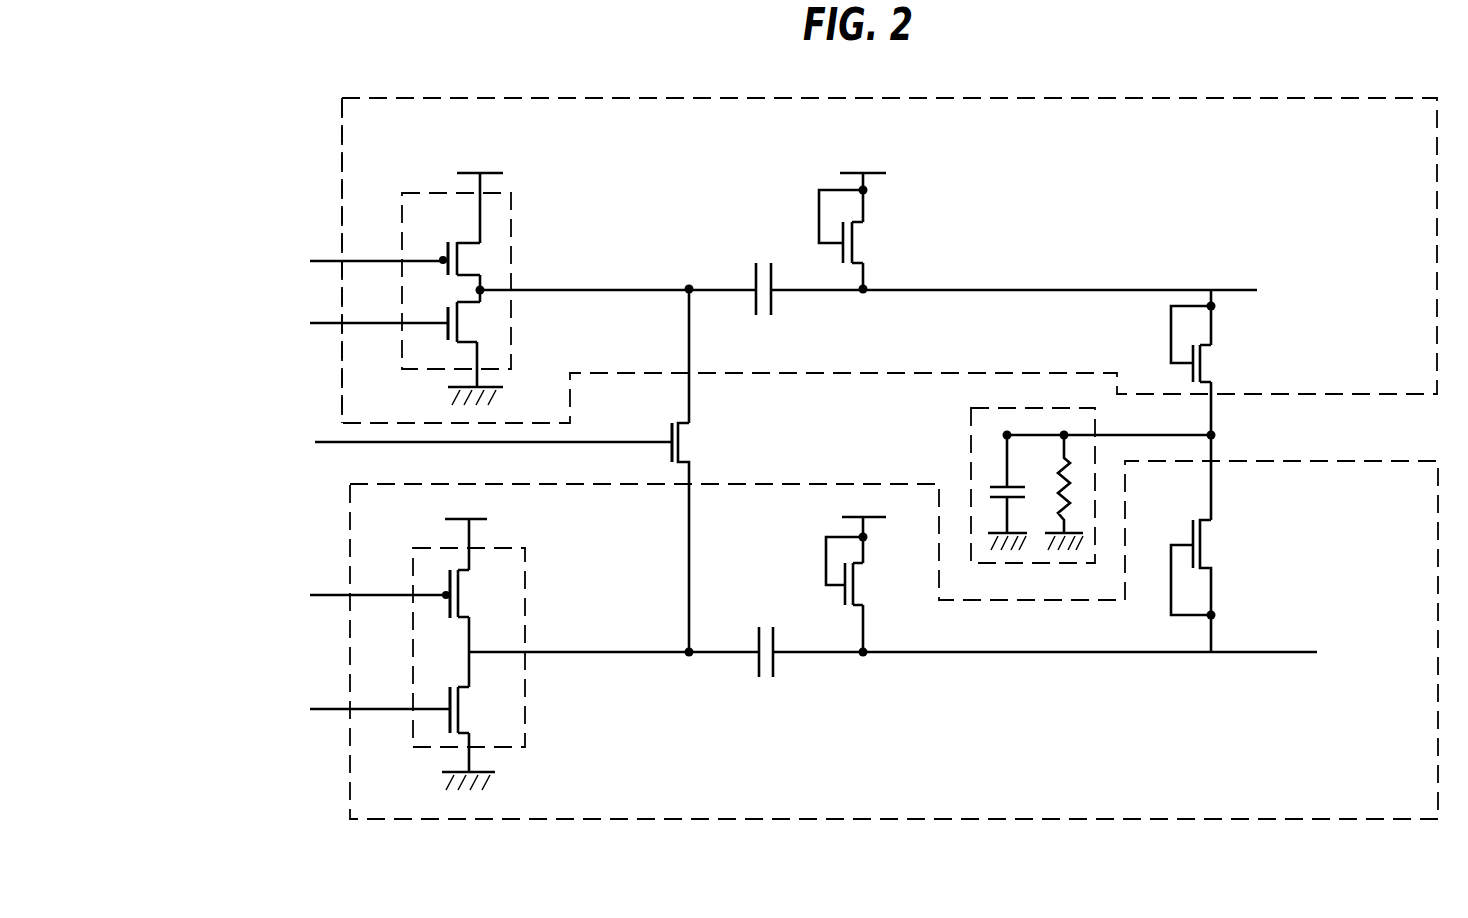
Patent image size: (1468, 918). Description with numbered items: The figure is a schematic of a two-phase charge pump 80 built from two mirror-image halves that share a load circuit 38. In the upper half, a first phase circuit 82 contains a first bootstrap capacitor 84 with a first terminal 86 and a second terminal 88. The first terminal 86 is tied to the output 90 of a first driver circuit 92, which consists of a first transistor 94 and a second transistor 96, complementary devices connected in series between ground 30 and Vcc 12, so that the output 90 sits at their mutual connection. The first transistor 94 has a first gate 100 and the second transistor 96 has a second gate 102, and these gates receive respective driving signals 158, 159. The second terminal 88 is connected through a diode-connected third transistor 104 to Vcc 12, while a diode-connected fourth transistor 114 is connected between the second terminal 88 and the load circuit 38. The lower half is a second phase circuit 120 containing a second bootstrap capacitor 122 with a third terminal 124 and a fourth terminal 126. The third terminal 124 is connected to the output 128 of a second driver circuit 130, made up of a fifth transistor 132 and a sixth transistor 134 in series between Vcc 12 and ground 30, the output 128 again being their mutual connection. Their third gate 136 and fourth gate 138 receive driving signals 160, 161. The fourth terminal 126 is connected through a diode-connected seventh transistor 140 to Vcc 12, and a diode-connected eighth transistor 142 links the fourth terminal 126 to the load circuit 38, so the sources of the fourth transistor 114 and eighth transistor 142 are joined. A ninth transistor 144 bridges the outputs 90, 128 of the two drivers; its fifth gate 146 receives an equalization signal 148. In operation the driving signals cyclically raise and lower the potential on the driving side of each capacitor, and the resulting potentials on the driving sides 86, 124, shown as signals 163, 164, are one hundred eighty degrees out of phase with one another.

The Vcc 12 is at (505, 152).
The ground 30 is at (487, 390).
The load circuit 38 is at (971, 450).
The two-phase charge pump 80 is at (302, 165).
The first phase circuit 82 is at (992, 98).
The first bootstrap capacitor 84 is at (988, 248).
The first terminal 86 is at (756, 278).
The second terminal 88 is at (772, 300).
The output 90 is at (485, 289).
The first driver circuit 92 is at (467, 298).
The first transistor 94 is at (472, 321).
The second transistor 96 is at (472, 257).
The first gate 100 is at (446, 334).
The second gate 102 is at (448, 248).
The third transistor 104 is at (872, 244).
The fourth transistor 114 is at (1219, 362).
The second phase circuit 120 is at (995, 820).
The second bootstrap capacitor 122 is at (1017, 612).
The third terminal 124 is at (757, 635).
The fourth terminal 126 is at (775, 665).
The output 128 is at (470, 652).
The second driver circuit 130 is at (479, 652).
The fifth transistor 132 is at (474, 709).
The sixth transistor 134 is at (474, 594).
The third gate 136 is at (450, 700).
The fourth gate 138 is at (450, 578).
The seventh transistor 140 is at (874, 582).
The eighth transistor 142 is at (1219, 542).
The ninth transistor 144 is at (699, 440).
The fifth gate 146 is at (672, 448).
The equalization signal 148 is at (262, 444).
The driving signal 158 is at (355, 324).
The driving signal 159 is at (355, 261).
The driving signal 160 is at (356, 711).
The driving signal 161 is at (356, 596).
The signal 163 is at (660, 289).
The signal 164 is at (665, 652).